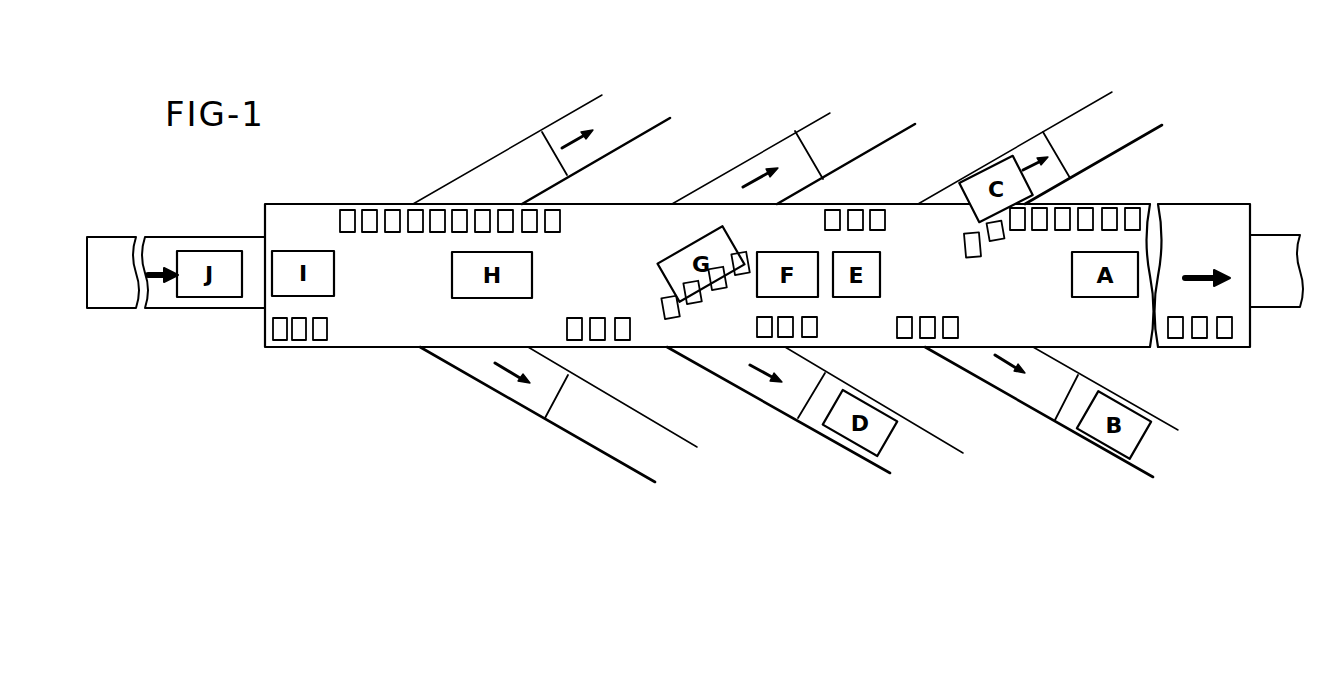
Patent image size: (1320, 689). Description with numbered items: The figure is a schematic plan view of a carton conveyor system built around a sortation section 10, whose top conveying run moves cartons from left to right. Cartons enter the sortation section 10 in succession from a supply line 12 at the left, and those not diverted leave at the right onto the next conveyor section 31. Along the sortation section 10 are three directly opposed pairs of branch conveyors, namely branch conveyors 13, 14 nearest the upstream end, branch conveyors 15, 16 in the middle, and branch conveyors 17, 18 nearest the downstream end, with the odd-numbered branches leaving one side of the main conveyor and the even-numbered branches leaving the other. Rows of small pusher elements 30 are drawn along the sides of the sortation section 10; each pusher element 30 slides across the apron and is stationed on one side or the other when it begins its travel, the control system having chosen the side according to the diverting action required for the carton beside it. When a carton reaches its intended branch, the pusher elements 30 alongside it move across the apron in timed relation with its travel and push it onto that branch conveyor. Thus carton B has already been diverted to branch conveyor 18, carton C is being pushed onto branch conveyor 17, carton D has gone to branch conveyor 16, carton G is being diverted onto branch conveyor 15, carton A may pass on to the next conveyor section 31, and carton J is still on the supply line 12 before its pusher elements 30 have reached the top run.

The sortation section 10 is at (347, 360).
The supply line 12 is at (165, 297).
The branch conveyor 13 is at (495, 172).
The branch conveyor 14 is at (495, 378).
The branch conveyor 15 is at (820, 126).
The branch conveyor 16 is at (770, 390).
The branch conveyor 17 is at (1030, 147).
The branch conveyor 18 is at (1040, 398).
The pusher element 30 is at (358, 210).
The next conveyor section 31 is at (1275, 297).